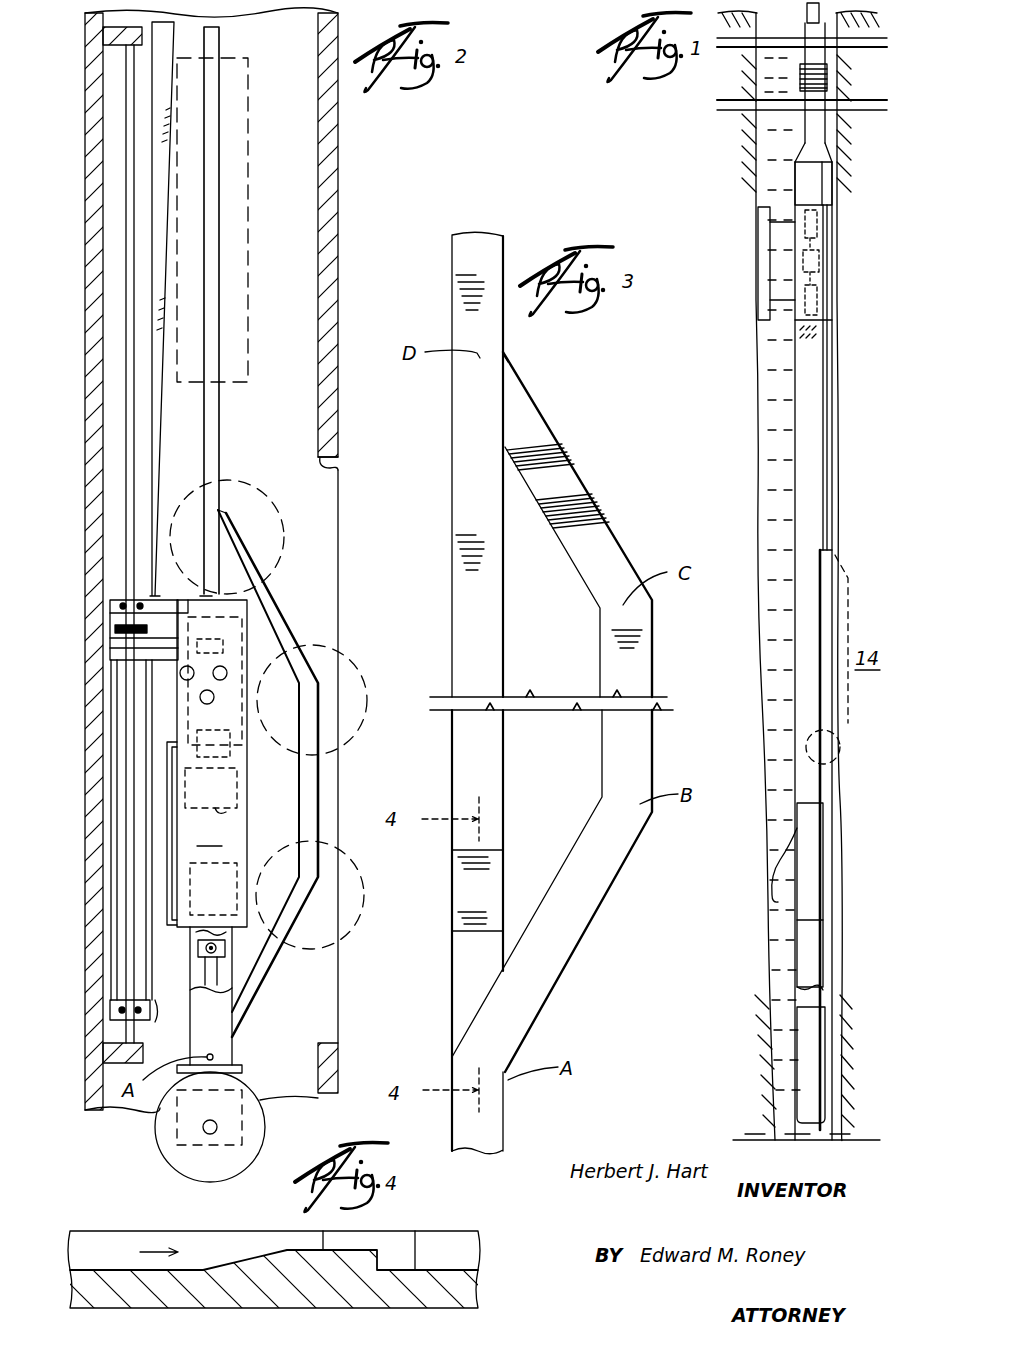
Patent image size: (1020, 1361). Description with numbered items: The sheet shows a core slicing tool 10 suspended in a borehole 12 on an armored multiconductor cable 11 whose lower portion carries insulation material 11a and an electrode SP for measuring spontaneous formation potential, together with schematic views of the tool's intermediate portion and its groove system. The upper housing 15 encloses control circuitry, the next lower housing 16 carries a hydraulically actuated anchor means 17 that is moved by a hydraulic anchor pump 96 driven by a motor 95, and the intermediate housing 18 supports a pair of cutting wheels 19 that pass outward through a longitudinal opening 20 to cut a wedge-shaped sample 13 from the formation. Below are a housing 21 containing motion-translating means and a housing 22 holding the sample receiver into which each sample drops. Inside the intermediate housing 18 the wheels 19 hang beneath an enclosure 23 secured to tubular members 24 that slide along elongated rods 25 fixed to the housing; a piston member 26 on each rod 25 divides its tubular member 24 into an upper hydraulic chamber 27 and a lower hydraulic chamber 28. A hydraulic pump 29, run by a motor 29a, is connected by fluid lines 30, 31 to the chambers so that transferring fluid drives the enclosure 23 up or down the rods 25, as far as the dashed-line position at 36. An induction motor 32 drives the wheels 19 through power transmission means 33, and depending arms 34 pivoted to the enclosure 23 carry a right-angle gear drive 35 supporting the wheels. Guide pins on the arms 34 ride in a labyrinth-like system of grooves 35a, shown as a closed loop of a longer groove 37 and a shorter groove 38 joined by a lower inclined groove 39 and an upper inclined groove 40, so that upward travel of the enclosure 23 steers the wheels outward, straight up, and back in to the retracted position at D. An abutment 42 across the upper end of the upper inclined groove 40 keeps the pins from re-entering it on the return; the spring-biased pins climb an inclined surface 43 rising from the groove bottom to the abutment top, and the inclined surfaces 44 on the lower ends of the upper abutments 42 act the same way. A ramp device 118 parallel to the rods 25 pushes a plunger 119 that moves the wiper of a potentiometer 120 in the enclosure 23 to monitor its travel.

In FIG. 1, the core slicing tool 10 is at (752, 425).
In FIG. 1, the armored multiconductor cable 11 is at (838, 14).
In FIG. 1, the insulation material 11a is at (825, 128).
In FIG. 1, the borehole 12 is at (760, 140).
In FIG. 1, the wedge-shaped sample 13 is at (850, 600).
In FIG. 1, the upper housing 15 is at (820, 178).
In FIG. 1, the lower housing 16 is at (815, 222).
In FIG. 1, the wall-engaging anchor means 17 is at (760, 245).
In FIG. 2, the intermediate housing 18 is at (103, 403).
In FIG. 1, the intermediate housing 18 is at (820, 366).
In FIG. 2, the cutting wheels 19 is at (157, 1131).
In FIG. 1, the cutting wheels 19 is at (830, 745).
In FIG. 2, the longitudinal opening 20 is at (338, 468).
In FIG. 1, the longitudinal opening 20 is at (825, 770).
In FIG. 1, the housing 21 is at (812, 877).
In FIG. 1, the sample receiver housing 22 is at (820, 1042).
In FIG. 2, the enclosure 23 is at (239, 763).
In FIG. 2, the tubular members 24 is at (148, 967).
In FIG. 2, the elongated rods 25 is at (126, 119).
In FIG. 2, the piston member 26 is at (115, 648).
In FIG. 2, the upper hydraulic chamber 27 is at (114, 611).
In FIG. 2, the lower hydraulic chamber 28 is at (110, 805).
In FIG. 2, the hydraulic pump 29 is at (228, 760).
In FIG. 2, the motor 29a is at (228, 812).
In FIG. 2, the fluid line 30 is at (176, 605).
In FIG. 2, the fluid line 31 is at (162, 1022).
In FIG. 2, the induction motor 32 is at (247, 882).
In FIG. 2, the power transmission means 33 is at (247, 958).
In FIG. 2, the depending arms 34 is at (210, 1022).
In FIG. 2, the right-angle gear drive 35 is at (242, 1068).
In FIG. 2, the system of grooves 35a is at (291, 589).
In FIG. 3, the system of grooves 35a is at (613, 522).
In FIG. 2, the dashed-line position 36 is at (248, 195).
In FIG. 3, the longer grooves 37 is at (500, 612).
In FIG. 3, the shorter grooves 38 is at (645, 618).
In FIG. 3, the lower inclined grooves 39 is at (535, 1002).
In FIG. 3, the upper inclined grooves 40 is at (522, 390).
In FIG. 3, the abutment 42 is at (516, 376).
In FIG. 3, the inclined surface 43 is at (480, 893).
In FIG. 4, the inclined surface 43 is at (250, 1258).
In FIG. 3, the inclined surfaces 44 is at (557, 469).
In FIG. 1, the motor 95 is at (815, 265).
In FIG. 1, the hydraulic anchor pump 96 is at (811, 300).
In FIG. 2, the ramp device 118 is at (150, 74).
In FIG. 2, the plunger 119 is at (150, 660).
In FIG. 2, the potentiometer 120 is at (250, 630).
In FIG. 2, the position D is at (210, 522).
In FIG. 1, the SP electrode SP is at (828, 82).